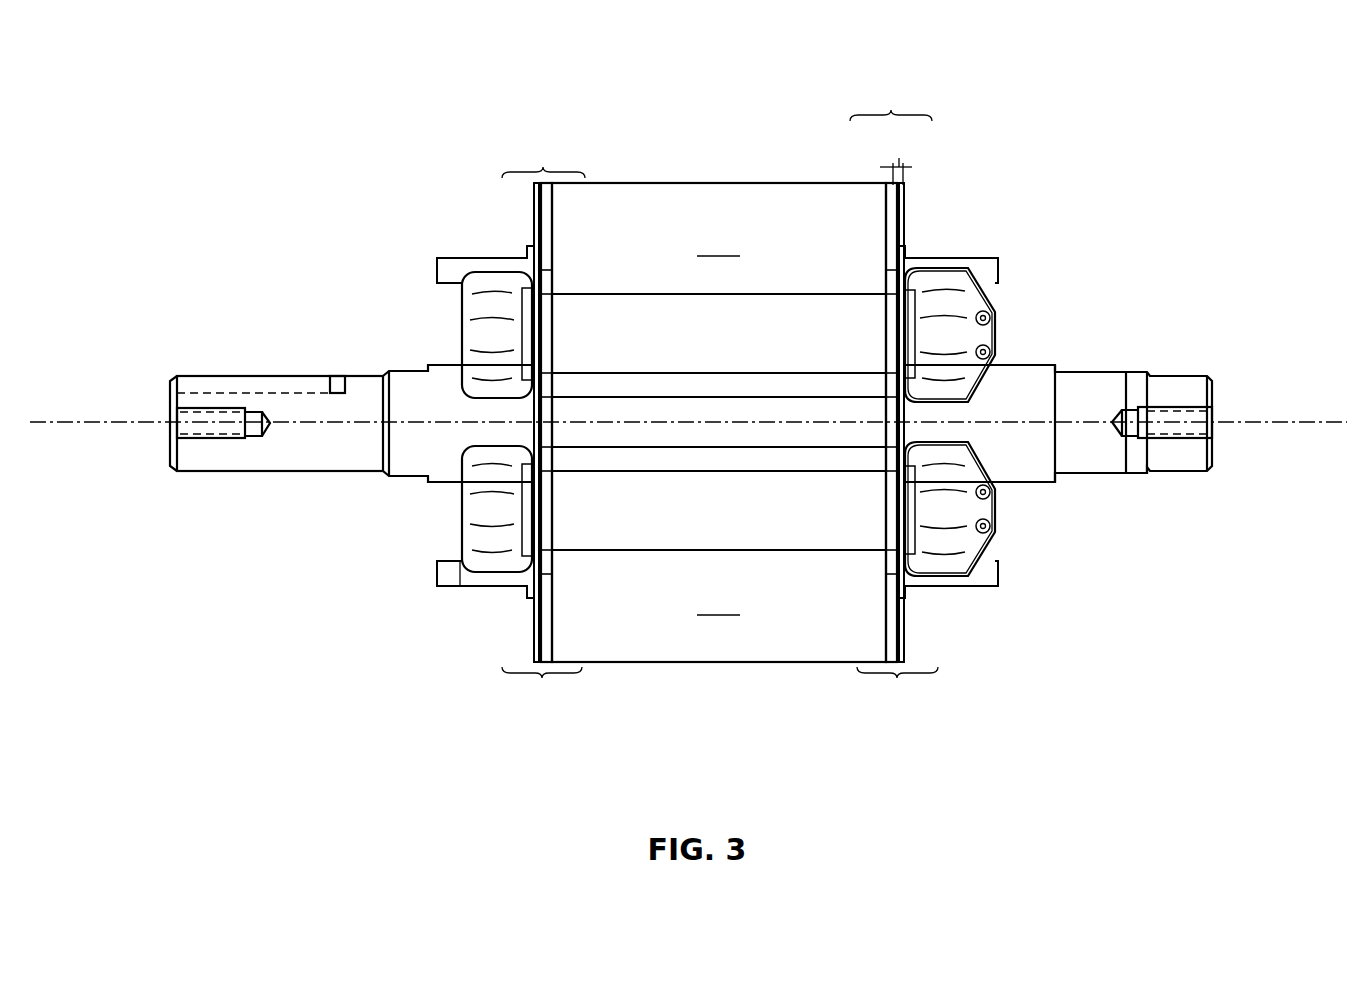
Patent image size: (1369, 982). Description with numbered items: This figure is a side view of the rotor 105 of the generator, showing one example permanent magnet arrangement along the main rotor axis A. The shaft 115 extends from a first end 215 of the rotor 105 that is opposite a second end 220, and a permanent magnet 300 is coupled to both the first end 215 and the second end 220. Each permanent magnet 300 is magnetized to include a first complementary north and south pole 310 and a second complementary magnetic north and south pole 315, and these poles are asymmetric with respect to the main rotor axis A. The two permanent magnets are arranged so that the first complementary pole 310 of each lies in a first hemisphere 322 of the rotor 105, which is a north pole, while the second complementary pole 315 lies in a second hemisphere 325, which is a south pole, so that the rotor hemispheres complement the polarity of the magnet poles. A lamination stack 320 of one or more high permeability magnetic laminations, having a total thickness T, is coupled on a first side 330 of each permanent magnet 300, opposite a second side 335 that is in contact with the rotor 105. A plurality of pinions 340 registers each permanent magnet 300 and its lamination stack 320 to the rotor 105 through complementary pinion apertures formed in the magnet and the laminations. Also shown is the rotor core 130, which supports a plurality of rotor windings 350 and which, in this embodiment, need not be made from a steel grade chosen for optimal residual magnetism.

The rotor 105 is at (390, 74).
The shaft 115 is at (1100, 371).
The rotor core 130 is at (720, 168).
The first end 215 is at (946, 244).
The second end 220 is at (462, 247).
The permanent magnet 300 is at (546, 228).
The first complementary north and south pole 310 is at (720, 675).
The second complementary magnetic north and south pole 315 is at (717, 147).
The lamination stack 320 is at (533, 603).
The first hemisphere 322 is at (719, 583).
The second hemisphere 325 is at (719, 262).
The first side 330 is at (539, 618).
The second side 335 is at (552, 617).
The pinion 340 is at (437, 265).
The rotor winding 350 is at (463, 328).